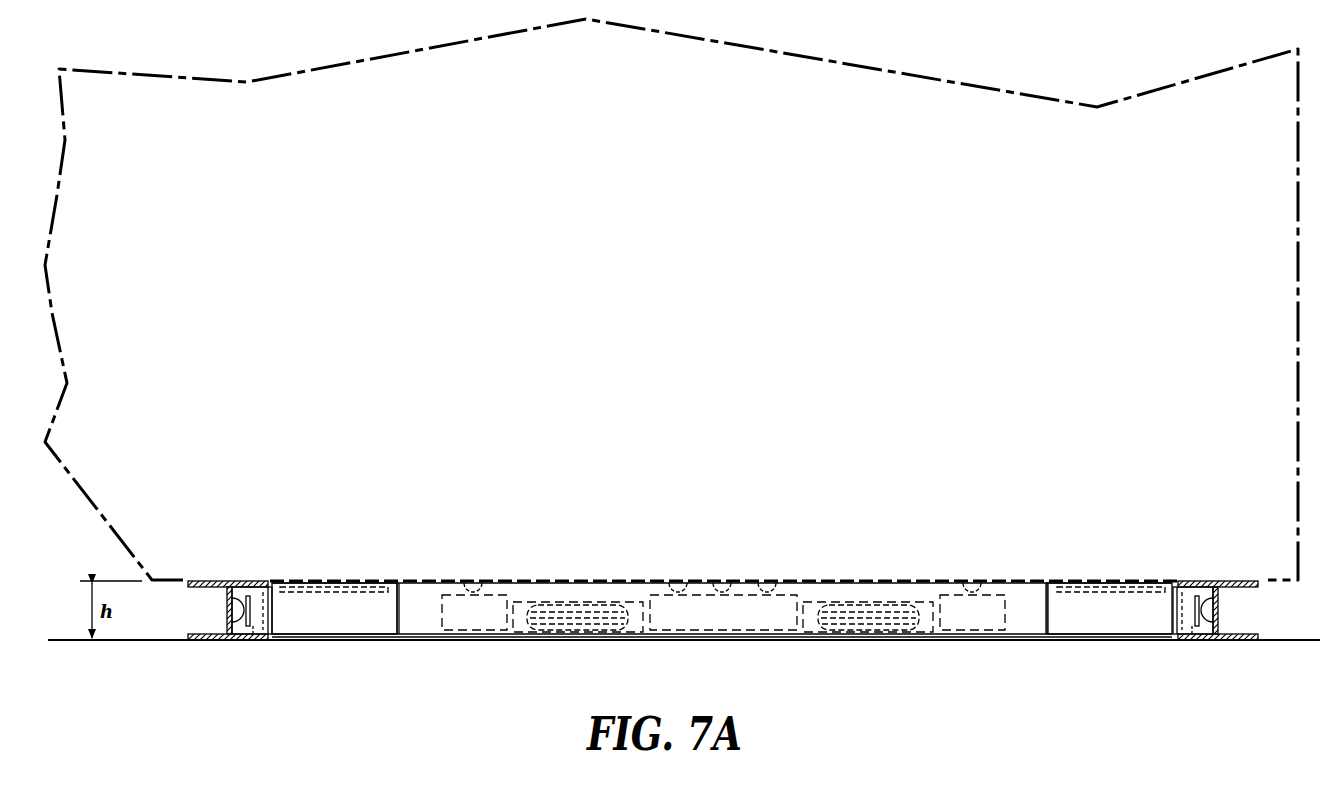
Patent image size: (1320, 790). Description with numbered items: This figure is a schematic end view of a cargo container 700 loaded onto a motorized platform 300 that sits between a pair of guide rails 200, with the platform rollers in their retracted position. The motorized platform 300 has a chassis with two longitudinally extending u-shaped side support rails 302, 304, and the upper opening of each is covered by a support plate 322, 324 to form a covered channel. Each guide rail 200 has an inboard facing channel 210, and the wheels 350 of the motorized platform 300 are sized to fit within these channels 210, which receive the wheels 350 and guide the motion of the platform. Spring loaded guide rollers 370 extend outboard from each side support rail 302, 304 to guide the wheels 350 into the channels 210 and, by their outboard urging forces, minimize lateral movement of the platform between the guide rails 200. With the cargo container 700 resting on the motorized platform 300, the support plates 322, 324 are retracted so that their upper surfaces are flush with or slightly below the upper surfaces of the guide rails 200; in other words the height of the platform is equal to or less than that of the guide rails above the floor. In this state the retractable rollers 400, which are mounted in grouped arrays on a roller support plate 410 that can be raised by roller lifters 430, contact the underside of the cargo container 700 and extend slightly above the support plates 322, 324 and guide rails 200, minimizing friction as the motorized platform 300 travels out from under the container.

The cargo container 700 is at (695, 372).
The motorized platform 300 is at (768, 613).
The guide rails 200 is at (227, 596).
The inboard facing channel 210 is at (262, 610).
The spring loaded guide rollers 370 is at (242, 611).
The wheels 350 is at (254, 631).
The side support rail 302 is at (390, 612).
The side support rail 304 is at (1055, 612).
The support plate 322 is at (339, 590).
The support plate 324 is at (1108, 590).
The retractable rollers 400 is at (481, 586).
The roller support plate 410 is at (668, 636).
The roller lifters 430 is at (578, 617).